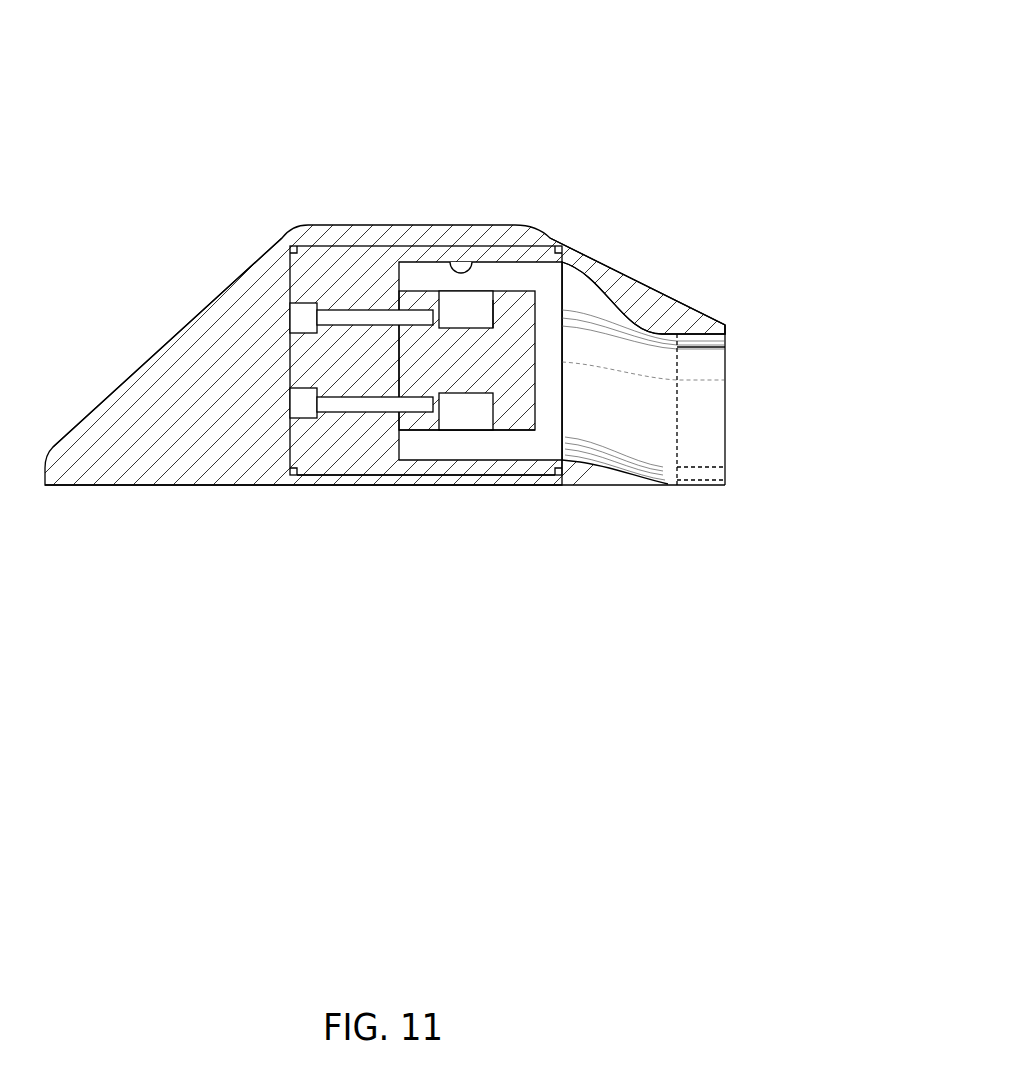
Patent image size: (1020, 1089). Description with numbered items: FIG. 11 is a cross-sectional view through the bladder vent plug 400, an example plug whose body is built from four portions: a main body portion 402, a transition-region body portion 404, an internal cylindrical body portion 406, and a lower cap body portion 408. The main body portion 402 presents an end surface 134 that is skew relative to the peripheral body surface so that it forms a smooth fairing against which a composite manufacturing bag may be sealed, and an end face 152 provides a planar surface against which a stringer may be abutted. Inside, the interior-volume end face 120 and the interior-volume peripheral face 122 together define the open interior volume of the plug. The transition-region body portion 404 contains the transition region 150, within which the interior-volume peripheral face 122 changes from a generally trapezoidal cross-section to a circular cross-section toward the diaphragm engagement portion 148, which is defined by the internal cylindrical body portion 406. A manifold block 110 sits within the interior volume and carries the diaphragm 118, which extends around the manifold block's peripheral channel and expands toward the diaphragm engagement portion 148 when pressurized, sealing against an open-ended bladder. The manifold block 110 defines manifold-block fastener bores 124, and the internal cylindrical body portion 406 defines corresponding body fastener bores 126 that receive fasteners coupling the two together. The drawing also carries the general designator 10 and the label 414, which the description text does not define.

The luminaire assembly 10 is at (681, 49).
The bladder vent plug 400 is at (656, 108).
The main body portion 402 is at (197, 301).
The end surface 134 is at (132, 375).
The internal cylindrical body portion 406 is at (330, 238).
The interior-volume end face 120 is at (402, 278).
The diaphragm engagement portion 148 is at (450, 261).
The diaphragm 118 is at (482, 293).
The thermal interface 414 is at (483, 328).
The transition-region body portion 404 is at (647, 280).
The end face 152 is at (725, 333).
The body fastener bores 126 is at (345, 323).
The lower cap body portion 408 is at (316, 486).
The manifold-block fastener bores 124 is at (413, 320).
The manifold block 110 is at (513, 440).
The interior-volume peripheral face 122 is at (582, 467).
The transition region 150 is at (667, 441).